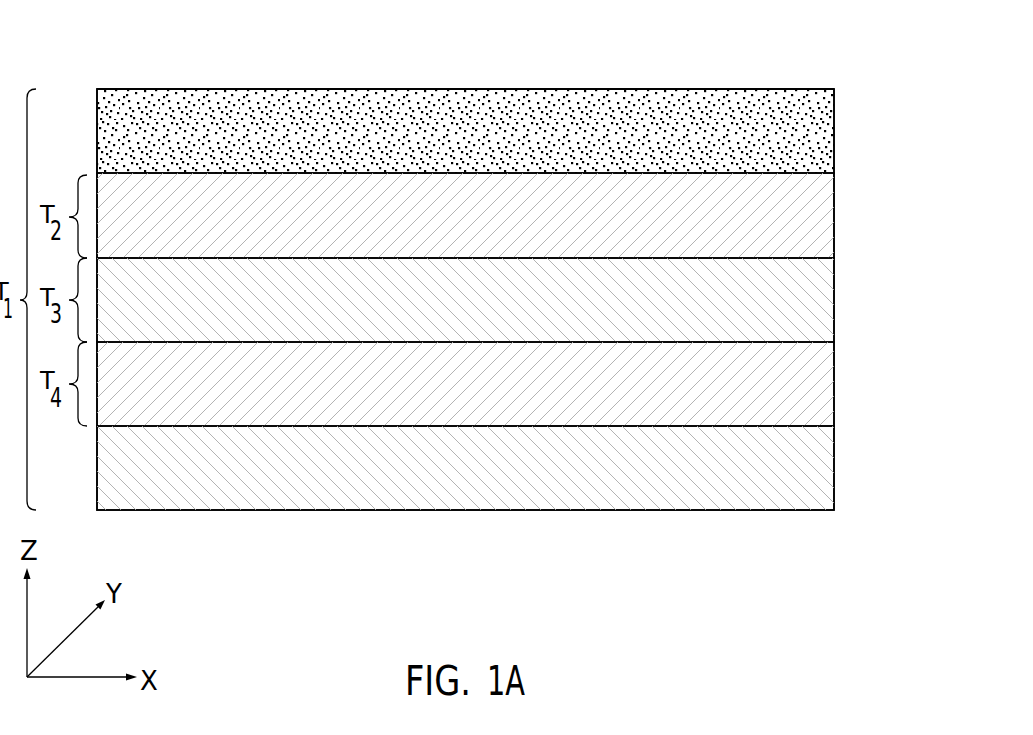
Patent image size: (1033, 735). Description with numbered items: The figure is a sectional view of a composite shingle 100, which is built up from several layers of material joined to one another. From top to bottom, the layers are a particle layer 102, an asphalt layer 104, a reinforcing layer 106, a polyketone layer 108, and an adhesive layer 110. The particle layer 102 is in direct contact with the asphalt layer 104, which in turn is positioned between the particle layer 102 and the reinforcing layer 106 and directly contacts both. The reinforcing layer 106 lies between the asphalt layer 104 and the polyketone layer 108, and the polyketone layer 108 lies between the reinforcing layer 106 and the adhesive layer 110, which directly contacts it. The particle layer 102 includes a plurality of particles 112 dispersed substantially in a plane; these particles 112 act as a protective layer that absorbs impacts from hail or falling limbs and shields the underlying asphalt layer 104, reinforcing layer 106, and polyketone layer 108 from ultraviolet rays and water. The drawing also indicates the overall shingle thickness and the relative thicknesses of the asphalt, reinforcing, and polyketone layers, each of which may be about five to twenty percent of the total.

The composite shingle 100 is at (498, 255).
The particle layer 102 is at (498, 113).
The asphalt layer 104 is at (834, 219).
The reinforcing layer 106 is at (834, 301).
The polyketone layer 108 is at (834, 385).
The adhesive layer 110 is at (834, 469).
The particles 112 is at (494, 116).